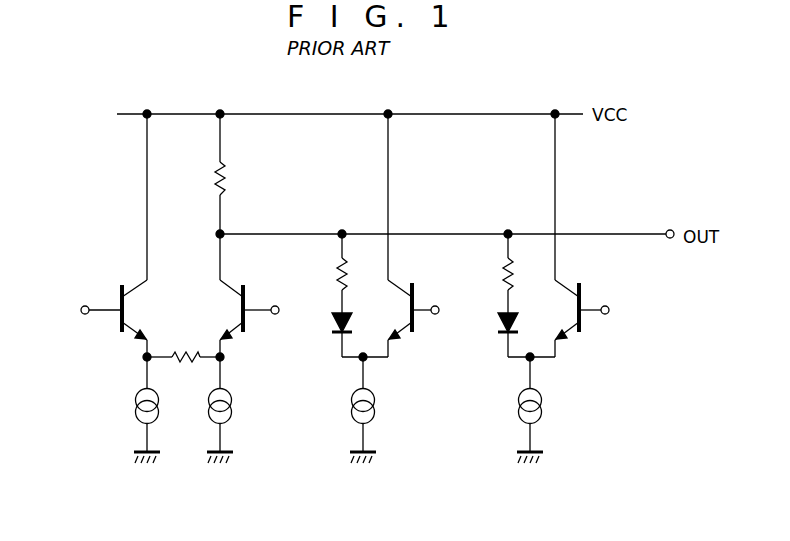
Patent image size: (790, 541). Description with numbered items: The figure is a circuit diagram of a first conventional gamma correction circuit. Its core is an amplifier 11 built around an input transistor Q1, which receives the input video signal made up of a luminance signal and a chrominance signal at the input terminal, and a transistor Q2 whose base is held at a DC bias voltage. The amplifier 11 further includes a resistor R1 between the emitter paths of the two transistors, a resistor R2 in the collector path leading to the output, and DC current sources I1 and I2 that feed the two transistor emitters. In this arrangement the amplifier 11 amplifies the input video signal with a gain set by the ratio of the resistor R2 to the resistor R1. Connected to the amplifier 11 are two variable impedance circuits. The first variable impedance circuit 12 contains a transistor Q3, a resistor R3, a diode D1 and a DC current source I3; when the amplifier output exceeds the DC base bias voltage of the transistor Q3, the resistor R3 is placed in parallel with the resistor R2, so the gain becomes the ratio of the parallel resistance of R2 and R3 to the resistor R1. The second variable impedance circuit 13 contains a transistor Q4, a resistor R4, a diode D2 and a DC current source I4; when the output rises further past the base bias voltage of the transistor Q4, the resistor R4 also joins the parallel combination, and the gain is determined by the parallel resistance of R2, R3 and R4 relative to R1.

The amplifier 11 is at (189, 281).
The variable impedance circuit 12 is at (376, 278).
The variable impedance circuit 13 is at (542, 278).
The input transistor Q1 is at (131, 308).
The transistor Q2 is at (236, 312).
The transistor Q3 is at (405, 310).
The transistor Q4 is at (571, 309).
The resistor R1 is at (184, 364).
The resistor R2 is at (226, 180).
The resistor R3 is at (334, 269).
The resistor R4 is at (500, 269).
The diode D1 is at (333, 330).
The diode D2 is at (499, 330).
The DC current source I1 is at (132, 405).
The DC current source I2 is at (232, 405).
The DC current source I3 is at (373, 405).
The DC current source I4 is at (540, 405).